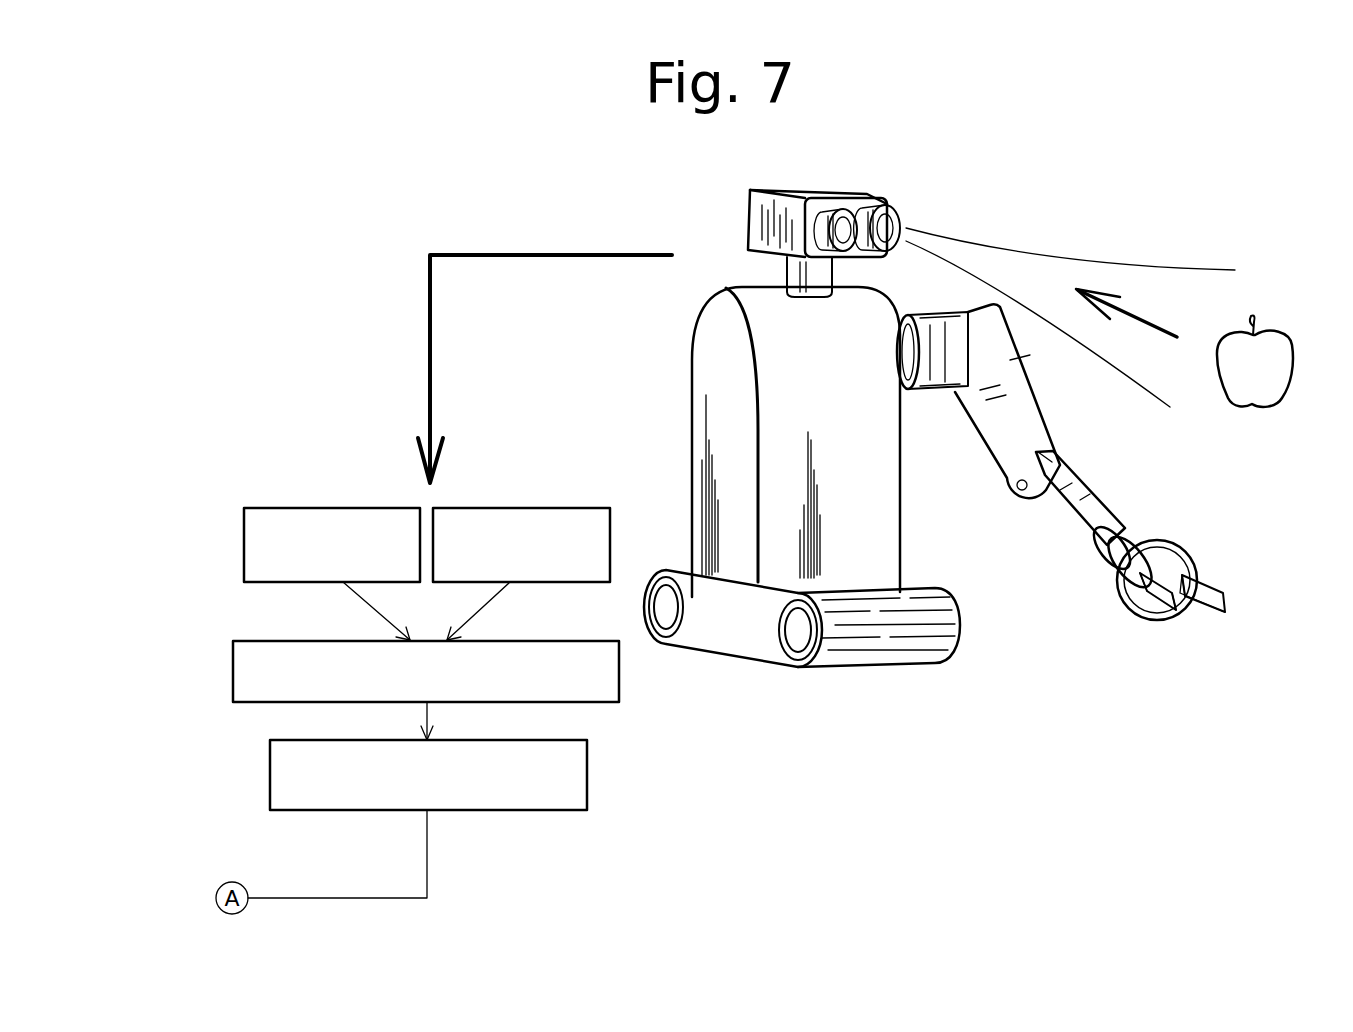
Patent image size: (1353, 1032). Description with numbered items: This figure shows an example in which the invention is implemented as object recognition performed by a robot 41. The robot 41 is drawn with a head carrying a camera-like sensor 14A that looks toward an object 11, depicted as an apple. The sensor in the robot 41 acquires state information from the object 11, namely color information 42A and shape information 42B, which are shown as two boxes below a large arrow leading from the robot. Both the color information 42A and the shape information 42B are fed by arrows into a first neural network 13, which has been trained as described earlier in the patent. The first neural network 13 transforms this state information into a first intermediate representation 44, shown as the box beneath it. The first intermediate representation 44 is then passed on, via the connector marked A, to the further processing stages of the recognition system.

The camera / image pickup unit (robot head) 14A is at (893, 203).
The robot 41 is at (690, 372).
The object 11 is at (1257, 408).
The color information 42A is at (284, 507).
The shape information 42B is at (588, 507).
The first neural network 13 is at (619, 686).
The first intermediate representation 44 is at (588, 772).